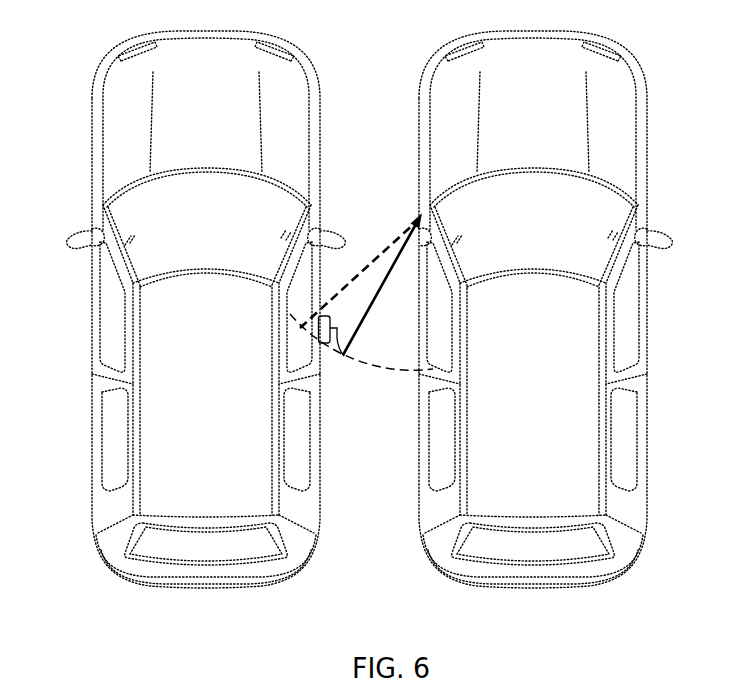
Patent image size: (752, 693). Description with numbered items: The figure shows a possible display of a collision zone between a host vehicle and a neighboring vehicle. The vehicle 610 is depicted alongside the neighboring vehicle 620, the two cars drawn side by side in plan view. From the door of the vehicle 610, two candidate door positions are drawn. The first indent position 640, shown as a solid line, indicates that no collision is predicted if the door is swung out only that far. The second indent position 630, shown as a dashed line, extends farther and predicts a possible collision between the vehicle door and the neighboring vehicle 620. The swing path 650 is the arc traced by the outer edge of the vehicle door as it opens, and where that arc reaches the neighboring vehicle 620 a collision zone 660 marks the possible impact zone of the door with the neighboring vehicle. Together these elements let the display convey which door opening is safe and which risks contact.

The vehicle 610 is at (635, 60).
The neighboring vehicle 620 is at (105, 58).
The second indent position 630 is at (393, 244).
The first indent position 640 is at (376, 290).
The swing path 650 is at (373, 370).
The collision zone 660 is at (346, 358).